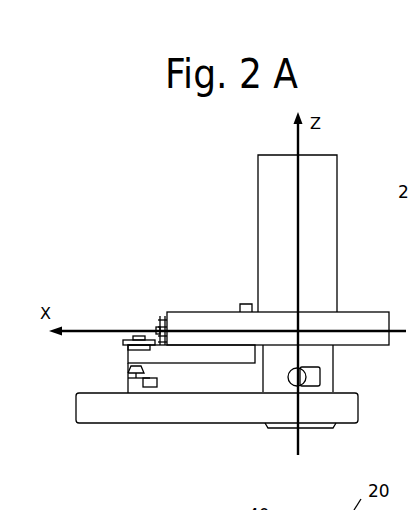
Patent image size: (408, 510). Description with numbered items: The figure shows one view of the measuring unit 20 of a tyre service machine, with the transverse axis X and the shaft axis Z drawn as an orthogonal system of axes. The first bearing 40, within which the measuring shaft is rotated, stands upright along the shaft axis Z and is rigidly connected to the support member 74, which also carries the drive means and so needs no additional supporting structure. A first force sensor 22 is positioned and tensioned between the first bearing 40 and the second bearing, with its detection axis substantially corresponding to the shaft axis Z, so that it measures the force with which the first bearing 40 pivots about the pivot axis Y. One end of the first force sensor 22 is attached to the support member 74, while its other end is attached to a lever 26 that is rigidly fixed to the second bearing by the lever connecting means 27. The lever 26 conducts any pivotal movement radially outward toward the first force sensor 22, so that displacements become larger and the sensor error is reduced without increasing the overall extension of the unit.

The measuring unit 20 is at (183, 249).
The first force sensor 22 is at (130, 382).
The lever 26 is at (150, 358).
The lever connecting means 27 is at (243, 305).
The first bearing 40 is at (259, 217).
The support member 74 is at (117, 414).